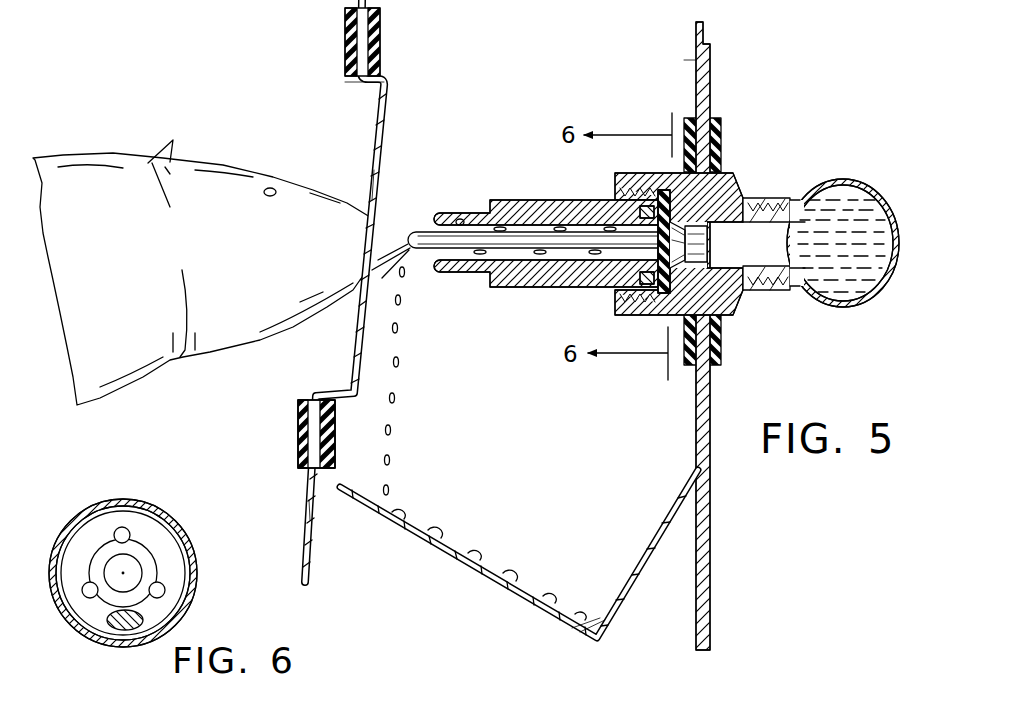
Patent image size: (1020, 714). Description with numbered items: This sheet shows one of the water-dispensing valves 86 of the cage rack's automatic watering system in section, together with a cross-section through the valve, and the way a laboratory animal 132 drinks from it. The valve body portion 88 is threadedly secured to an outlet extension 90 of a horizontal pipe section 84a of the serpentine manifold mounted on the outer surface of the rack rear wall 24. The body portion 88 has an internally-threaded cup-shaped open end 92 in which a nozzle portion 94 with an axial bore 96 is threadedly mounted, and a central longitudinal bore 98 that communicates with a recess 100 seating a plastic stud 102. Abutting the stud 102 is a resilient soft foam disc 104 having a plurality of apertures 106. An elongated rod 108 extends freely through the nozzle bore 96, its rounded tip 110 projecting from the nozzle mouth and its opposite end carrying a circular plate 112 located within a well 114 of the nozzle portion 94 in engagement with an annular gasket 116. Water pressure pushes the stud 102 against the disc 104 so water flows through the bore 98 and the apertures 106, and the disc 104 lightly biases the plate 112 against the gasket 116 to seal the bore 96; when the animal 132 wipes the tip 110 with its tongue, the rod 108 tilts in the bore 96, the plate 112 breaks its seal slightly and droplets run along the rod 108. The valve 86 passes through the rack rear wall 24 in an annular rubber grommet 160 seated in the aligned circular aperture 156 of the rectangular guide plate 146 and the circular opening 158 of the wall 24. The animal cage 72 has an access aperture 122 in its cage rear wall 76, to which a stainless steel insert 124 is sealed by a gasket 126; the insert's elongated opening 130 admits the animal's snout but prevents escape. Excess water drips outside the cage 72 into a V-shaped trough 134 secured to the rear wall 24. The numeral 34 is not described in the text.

In FIG. 5, the rear wall 24 is at (711, 80).
In FIG. 5, the housing 34 is at (115, 0).
In FIG. 5, the animal cage 72 is at (300, 502).
In FIG. 5, the cage rear wall 76 is at (313, 563).
In FIG. 5, the horizontal pipe section 84a is at (841, 183).
In FIG. 5, the water-dispensing valve 86 is at (524, 204).
In FIG. 5, the valve body portion 88 is at (712, 186).
In FIG. 5, the outlet extension 90 is at (786, 195).
In FIG. 5, the cup-shaped open end 92 is at (626, 181).
In FIG. 5, the nozzle portion 94 is at (538, 207).
In FIG. 5, the axial bore 96 is at (460, 225).
In FIG. 5, the central longitudinal bore 98 is at (752, 203).
In FIG. 5, the recess 100 is at (714, 305).
In FIG. 5, the plastic stud 102 is at (727, 277).
In FIG. 5, the disc 104 is at (690, 233).
In FIG. 6, the disc 104 is at (157, 527).
In FIG. 5, the apertures 106 is at (652, 298).
In FIG. 6, the apertures 106 is at (123, 527).
In FIG. 5, the elongated rod 108 is at (468, 246).
In FIG. 5, the rounded tip 110 is at (409, 236).
In FIG. 5, the circular plate 112 is at (655, 208).
In FIG. 5, the well 114 is at (621, 298).
In FIG. 5, the annular gasket 116 is at (614, 291).
In FIG. 5, the access aperture 122 is at (360, 88).
In FIG. 5, the stainless steel insert 124 is at (392, 118).
In FIG. 5, the gasket 126 is at (353, 52).
In FIG. 5, the elongated opening 130 is at (373, 175).
In FIG. 5, the laboratory animal 132 is at (82, 160).
In FIG. 5, the V-shaped trough 134 is at (495, 578).
In FIG. 5, the rectangular plate 146 is at (697, 67).
In FIG. 5, the circular aperture 156 is at (684, 171).
In FIG. 5, the circular opening 158 is at (713, 163).
In FIG. 5, the annular rubber grommet 160 is at (721, 123).